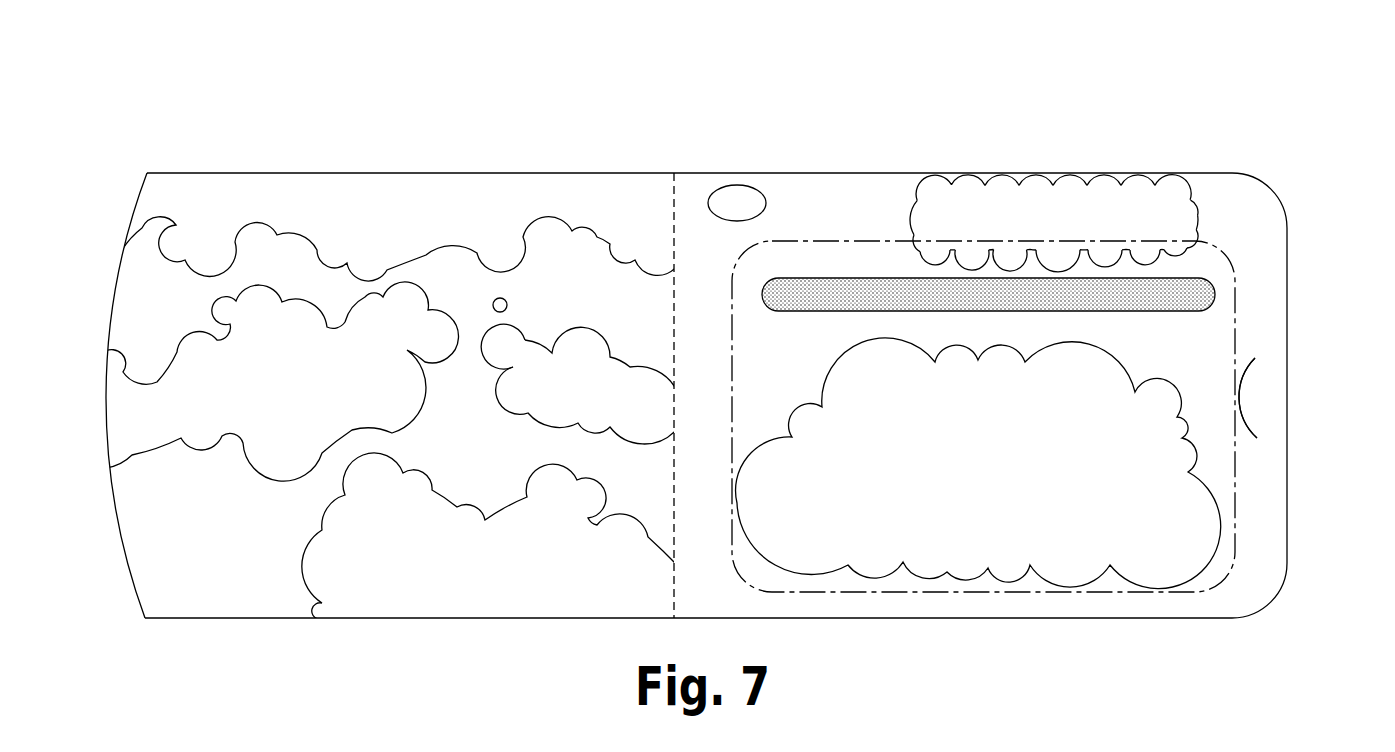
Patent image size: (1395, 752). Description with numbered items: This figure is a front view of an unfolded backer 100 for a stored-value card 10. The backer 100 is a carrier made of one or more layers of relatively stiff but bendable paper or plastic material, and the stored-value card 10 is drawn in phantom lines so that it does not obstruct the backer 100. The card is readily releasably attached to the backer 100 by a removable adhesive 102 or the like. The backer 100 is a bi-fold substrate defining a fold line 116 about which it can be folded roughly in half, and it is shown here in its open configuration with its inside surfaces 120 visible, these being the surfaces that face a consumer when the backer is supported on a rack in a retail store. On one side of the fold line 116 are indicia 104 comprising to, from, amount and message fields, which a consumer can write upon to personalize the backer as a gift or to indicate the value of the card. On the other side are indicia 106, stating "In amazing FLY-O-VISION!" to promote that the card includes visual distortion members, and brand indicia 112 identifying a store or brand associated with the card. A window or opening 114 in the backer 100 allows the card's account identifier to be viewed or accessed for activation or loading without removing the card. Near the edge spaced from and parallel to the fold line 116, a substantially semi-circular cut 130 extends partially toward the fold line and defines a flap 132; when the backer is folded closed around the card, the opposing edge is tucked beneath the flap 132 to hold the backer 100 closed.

The backer 100 is at (1224, 84).
The stored-value card 10 is at (1243, 327).
The removable adhesive 102 is at (1212, 295).
The indicia 104 is at (200, 390).
The indicia 106 is at (1060, 198).
The brand indicia 112 is at (751, 174).
The window or opening 114 is at (1183, 424).
The fold line 116 is at (668, 206).
The inside surfaces 120 is at (1256, 571).
The cut 130 is at (1256, 360).
The flap 132 is at (1247, 398).